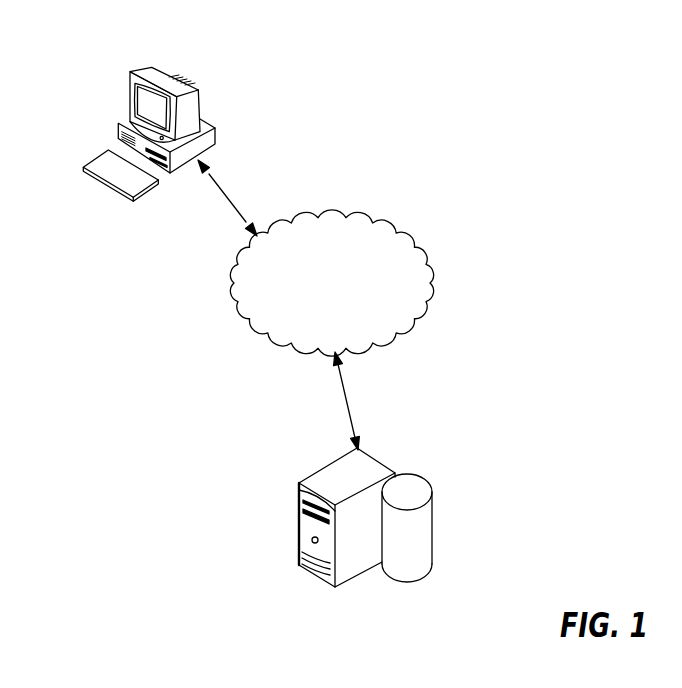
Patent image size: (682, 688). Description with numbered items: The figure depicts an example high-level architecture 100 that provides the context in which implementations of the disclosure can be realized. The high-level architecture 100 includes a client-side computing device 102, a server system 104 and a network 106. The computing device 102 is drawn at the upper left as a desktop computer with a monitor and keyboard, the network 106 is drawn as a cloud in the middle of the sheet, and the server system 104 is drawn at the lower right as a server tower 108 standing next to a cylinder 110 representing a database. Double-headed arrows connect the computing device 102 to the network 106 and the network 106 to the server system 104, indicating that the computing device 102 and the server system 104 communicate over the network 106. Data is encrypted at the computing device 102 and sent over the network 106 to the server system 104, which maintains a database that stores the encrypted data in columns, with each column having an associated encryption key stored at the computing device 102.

The high-level architecture 100 is at (540, 110).
The computing device 102 is at (130, 71).
The server system 104 is at (455, 432).
The network 106 is at (433, 281).
The server 108 is at (298, 535).
The database 110 is at (433, 519).